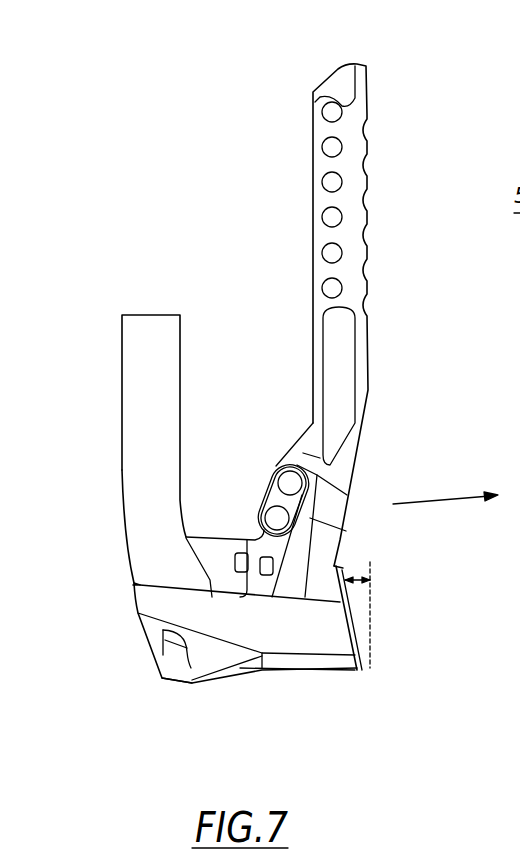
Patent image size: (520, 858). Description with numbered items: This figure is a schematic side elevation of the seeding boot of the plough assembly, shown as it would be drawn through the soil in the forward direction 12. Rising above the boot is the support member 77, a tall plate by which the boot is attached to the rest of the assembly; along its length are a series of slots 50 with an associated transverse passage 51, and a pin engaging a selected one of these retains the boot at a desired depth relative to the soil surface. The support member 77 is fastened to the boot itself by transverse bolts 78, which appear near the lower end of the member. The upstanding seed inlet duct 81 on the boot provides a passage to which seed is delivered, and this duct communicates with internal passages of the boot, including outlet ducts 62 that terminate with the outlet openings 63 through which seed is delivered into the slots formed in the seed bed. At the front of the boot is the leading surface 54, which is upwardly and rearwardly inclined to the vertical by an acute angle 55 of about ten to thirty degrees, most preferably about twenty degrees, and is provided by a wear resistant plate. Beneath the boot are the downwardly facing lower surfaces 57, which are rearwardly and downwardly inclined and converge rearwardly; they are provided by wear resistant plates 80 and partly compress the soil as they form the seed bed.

The forward direction 12 is at (440, 502).
The slots 50 is at (367, 128).
The transverse passage 51 is at (330, 148).
The leading surface 54 is at (362, 638).
The acute angle 55 is at (356, 580).
The lower surfaces 57 is at (245, 678).
The outlet ducts 62 is at (163, 640).
The outlet openings 63 is at (170, 645).
The support member 77 is at (355, 192).
The transverse bolts 78 is at (275, 519).
The wear resistant plates 80 is at (192, 685).
The seed inlet duct 81 is at (182, 395).